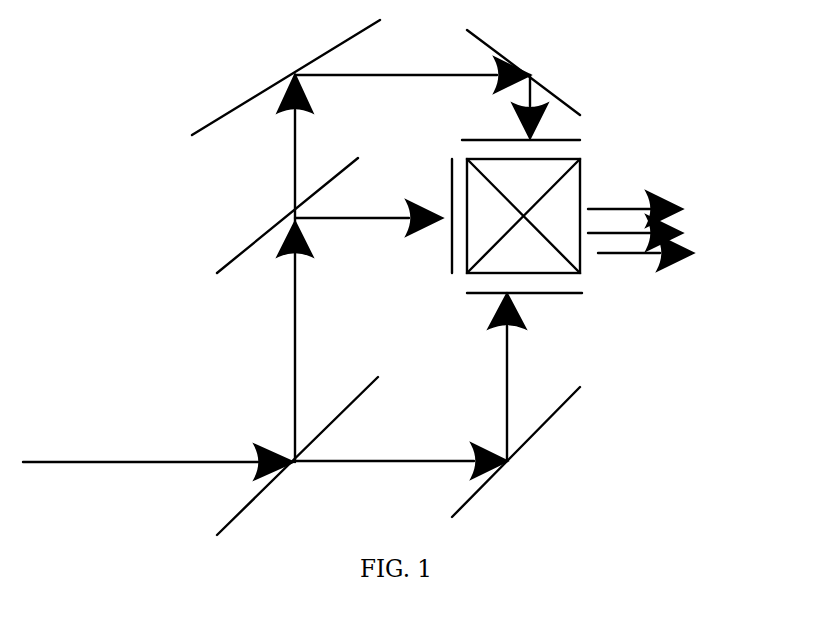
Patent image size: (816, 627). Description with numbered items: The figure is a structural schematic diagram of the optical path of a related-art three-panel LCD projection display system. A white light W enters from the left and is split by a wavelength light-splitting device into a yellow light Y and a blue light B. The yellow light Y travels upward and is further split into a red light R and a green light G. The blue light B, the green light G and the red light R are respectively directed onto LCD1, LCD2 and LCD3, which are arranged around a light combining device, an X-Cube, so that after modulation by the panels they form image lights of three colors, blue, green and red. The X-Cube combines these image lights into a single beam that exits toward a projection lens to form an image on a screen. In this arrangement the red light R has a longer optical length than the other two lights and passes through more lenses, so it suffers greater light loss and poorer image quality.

The element LCD1 is at (580, 300).
The element LCD2 is at (450, 259).
The element LCD3 is at (573, 140).
The white light W is at (158, 444).
The yellow light Y is at (285, 268).
The red light R is at (421, 84).
The green light G is at (368, 198).
The blue light B is at (419, 386).